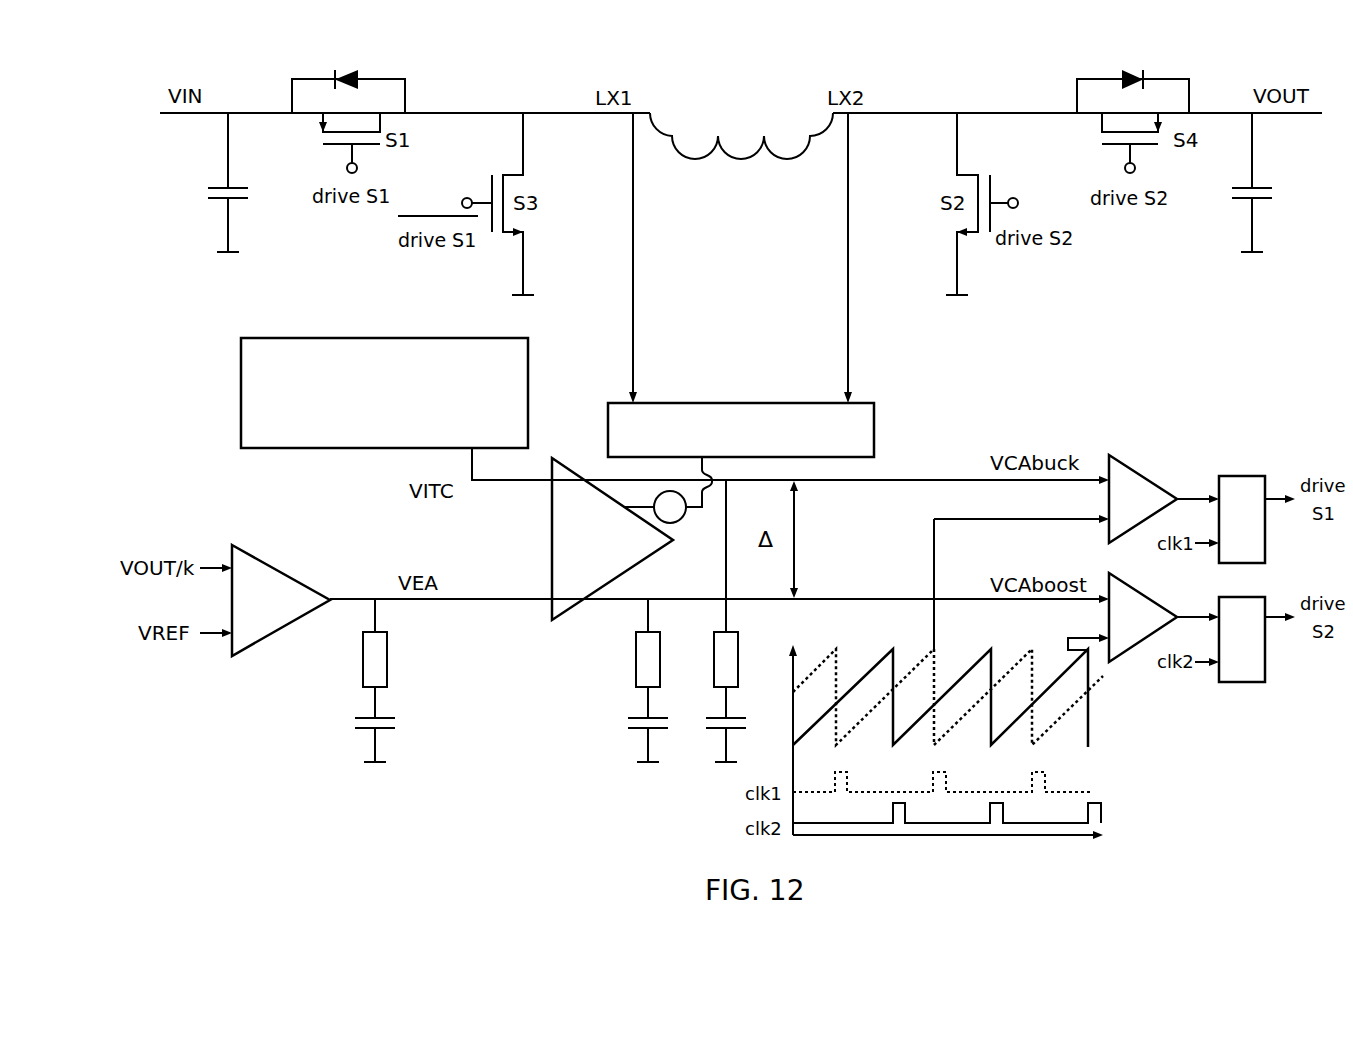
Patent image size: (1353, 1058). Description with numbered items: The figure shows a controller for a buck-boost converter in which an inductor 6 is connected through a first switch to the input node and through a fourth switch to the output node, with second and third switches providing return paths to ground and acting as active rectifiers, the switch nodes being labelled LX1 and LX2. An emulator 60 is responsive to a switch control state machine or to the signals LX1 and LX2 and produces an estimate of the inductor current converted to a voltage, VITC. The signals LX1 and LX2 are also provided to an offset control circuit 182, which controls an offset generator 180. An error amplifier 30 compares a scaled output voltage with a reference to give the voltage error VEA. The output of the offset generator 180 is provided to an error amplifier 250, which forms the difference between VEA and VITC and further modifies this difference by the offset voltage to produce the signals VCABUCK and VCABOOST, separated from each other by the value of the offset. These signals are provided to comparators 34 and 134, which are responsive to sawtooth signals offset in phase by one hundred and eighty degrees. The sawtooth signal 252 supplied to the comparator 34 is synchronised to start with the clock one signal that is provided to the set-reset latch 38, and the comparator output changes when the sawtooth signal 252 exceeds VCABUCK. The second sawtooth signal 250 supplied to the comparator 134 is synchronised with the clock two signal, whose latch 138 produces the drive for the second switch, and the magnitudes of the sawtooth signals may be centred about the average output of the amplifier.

The inductor 6 is at (740, 108).
The emulator 60 is at (383, 338).
The offset control circuit 182 is at (745, 402).
The offset generator 180 is at (674, 523).
The error amplifier 250 is at (551, 540).
The sawtooth signal 252 is at (856, 727).
The error amplifier 30 is at (276, 567).
The comparator 34 is at (1143, 475).
The set-reset latch 38 is at (1247, 476).
The comparator 134 is at (1124, 653).
The boost RS latch 138 is at (1244, 683).